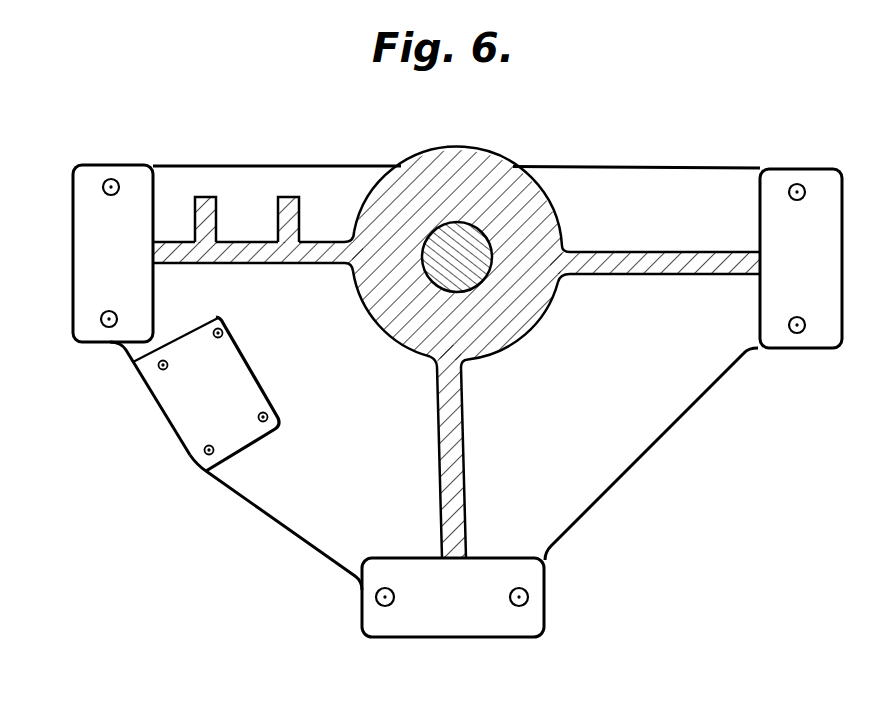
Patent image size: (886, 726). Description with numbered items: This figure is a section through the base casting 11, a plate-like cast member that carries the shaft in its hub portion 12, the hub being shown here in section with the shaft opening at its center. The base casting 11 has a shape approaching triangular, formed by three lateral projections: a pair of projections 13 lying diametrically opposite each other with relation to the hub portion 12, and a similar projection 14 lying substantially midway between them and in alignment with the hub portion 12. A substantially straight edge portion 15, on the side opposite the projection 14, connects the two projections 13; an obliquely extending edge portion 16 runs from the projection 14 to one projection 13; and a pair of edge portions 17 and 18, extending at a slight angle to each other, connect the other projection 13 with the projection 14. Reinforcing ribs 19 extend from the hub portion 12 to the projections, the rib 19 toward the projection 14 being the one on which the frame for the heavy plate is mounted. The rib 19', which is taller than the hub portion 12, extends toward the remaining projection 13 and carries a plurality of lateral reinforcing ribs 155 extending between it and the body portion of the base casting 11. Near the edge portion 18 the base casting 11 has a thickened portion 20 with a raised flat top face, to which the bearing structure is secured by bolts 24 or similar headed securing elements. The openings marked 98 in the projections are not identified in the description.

The base casting 11 is at (643, 405).
The hub portion 12 is at (537, 317).
The lateral projections 13 is at (86, 254).
The lateral projection 14 is at (452, 617).
The straight edge portion 15 is at (335, 166).
The obliquely extending edge portion 16 is at (608, 487).
The edge portion 17 is at (278, 527).
The edge portion 18 is at (133, 360).
The reinforcing ribs 19 is at (595, 402).
The reinforcing rib 19' is at (255, 225).
The thickened portion 20 is at (247, 392).
The bolts 24 is at (225, 330).
The mounting holes 98 is at (116, 181).
The lateral reinforcing ribs 155 is at (200, 213).